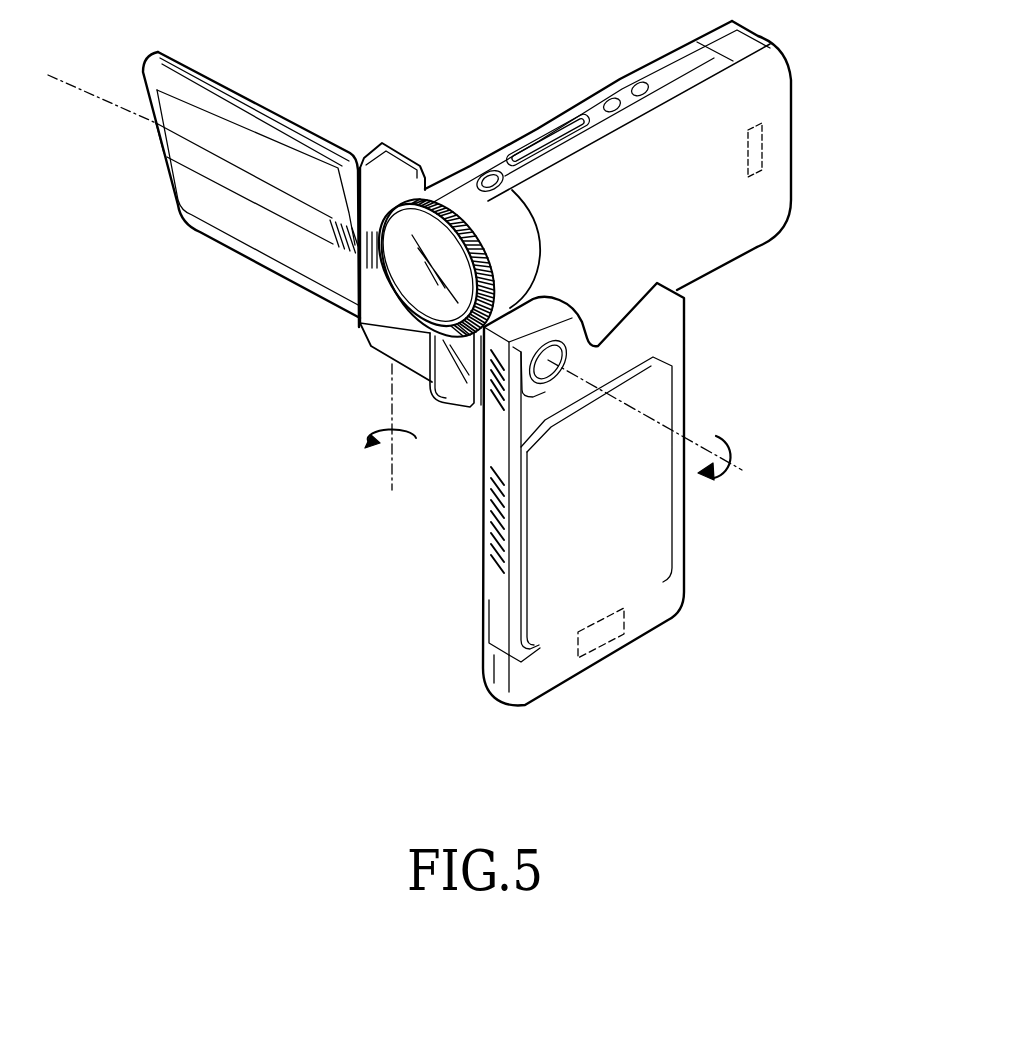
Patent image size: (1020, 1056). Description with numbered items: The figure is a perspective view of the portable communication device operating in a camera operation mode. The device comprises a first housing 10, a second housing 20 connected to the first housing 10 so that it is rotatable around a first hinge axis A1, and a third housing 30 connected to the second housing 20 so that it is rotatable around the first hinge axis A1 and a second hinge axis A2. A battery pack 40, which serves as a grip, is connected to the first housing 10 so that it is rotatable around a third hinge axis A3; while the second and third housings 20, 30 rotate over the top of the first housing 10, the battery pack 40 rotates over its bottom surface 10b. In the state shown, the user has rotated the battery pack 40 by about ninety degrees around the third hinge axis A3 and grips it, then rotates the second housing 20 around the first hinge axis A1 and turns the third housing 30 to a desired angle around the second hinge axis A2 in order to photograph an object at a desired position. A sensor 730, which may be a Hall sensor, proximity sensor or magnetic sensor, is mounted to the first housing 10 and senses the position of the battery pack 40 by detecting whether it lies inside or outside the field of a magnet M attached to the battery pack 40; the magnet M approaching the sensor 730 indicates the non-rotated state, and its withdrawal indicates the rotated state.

The first housing 10 is at (812, 122).
The bottom surface 10b is at (737, 237).
The sensor 730 is at (758, 156).
The third housing 30 is at (273, 283).
The second housing 20 is at (355, 347).
The battery pack 40 is at (706, 546).
The magnet M is at (602, 638).
The first hinge axis A1 is at (392, 472).
The second hinge axis A2 is at (103, 100).
The third hinge axis A3 is at (700, 450).